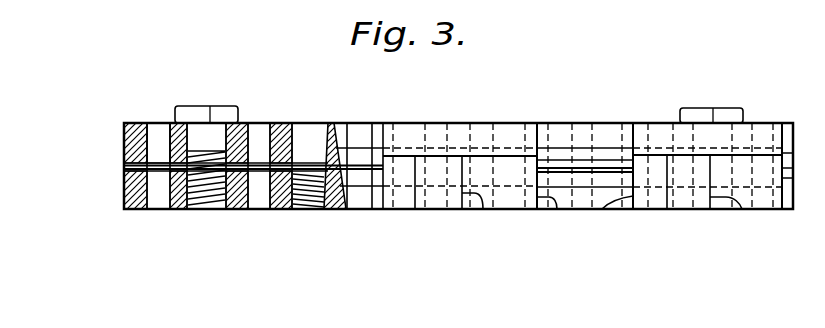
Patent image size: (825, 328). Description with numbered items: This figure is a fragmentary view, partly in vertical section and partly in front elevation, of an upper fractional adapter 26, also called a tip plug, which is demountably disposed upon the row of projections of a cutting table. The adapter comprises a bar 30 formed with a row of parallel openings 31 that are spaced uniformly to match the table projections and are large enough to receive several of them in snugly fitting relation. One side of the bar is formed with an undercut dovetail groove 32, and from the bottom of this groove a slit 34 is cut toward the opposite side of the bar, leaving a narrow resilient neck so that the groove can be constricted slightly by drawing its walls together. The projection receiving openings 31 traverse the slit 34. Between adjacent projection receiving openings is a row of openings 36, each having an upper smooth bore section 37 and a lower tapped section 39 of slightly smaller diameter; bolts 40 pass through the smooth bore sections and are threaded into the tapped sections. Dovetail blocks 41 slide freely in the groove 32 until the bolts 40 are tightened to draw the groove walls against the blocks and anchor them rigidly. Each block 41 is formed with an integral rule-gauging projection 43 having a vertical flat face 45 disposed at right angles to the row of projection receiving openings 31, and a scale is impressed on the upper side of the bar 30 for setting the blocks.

The upper fractional adapter 26 is at (121, 151).
The bar 30 is at (558, 130).
The openings 31 is at (259, 209).
The dovetail groove 32 is at (605, 158).
The slit 34 is at (153, 162).
The openings 36 is at (256, 137).
The smooth bore section 37 is at (315, 142).
The tapped section 39 is at (303, 209).
The bolt 40 is at (226, 110).
The dovetail block 41 is at (602, 209).
The rule-gauging projection 43 is at (440, 209).
The vertical flat face 45 is at (483, 209).